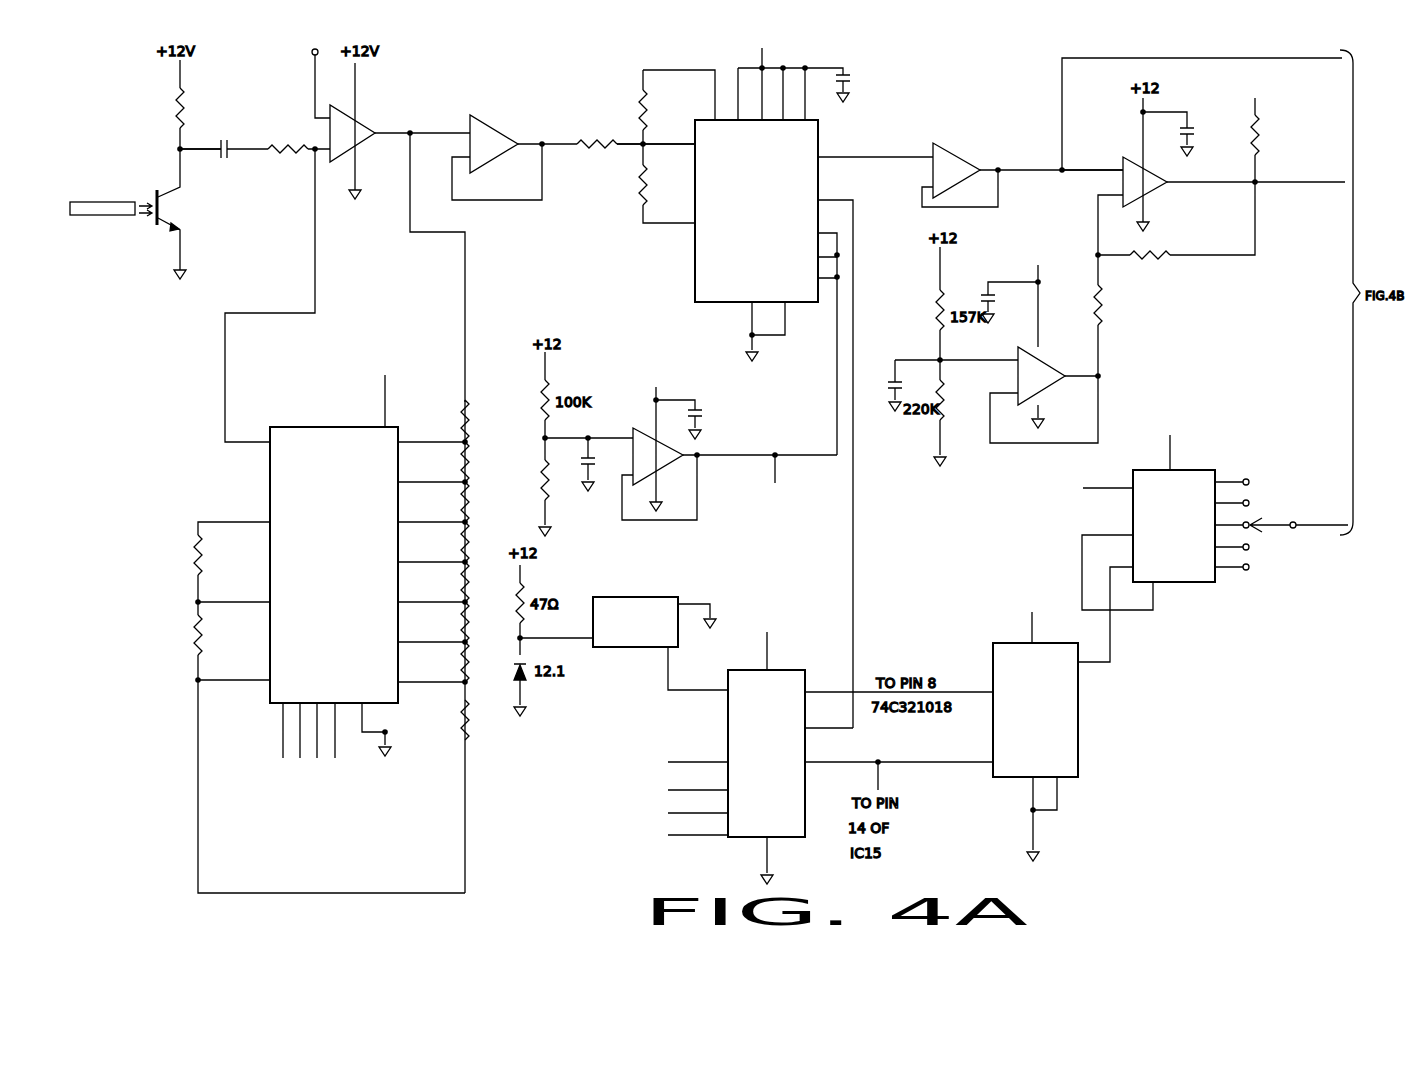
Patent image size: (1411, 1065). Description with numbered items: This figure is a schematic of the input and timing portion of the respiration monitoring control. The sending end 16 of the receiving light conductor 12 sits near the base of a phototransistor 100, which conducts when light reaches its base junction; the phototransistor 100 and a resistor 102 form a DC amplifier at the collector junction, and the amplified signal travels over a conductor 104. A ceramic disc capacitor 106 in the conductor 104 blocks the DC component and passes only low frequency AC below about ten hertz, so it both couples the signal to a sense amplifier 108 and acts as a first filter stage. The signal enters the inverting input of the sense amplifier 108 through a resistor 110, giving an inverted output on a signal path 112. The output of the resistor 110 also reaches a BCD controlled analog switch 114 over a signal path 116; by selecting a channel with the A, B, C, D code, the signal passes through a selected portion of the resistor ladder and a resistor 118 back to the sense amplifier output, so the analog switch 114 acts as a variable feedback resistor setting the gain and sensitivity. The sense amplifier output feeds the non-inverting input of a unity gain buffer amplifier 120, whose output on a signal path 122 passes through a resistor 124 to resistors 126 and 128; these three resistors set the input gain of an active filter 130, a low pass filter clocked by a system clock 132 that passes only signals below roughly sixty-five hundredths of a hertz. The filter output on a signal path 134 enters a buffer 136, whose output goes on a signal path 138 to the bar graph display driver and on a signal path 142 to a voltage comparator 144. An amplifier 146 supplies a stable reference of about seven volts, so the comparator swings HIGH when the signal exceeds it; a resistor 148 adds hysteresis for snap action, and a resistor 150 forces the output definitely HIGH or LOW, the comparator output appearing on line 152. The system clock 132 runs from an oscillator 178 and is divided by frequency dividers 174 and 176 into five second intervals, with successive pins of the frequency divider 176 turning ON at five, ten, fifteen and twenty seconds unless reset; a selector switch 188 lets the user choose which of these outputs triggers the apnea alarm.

The receiving light conductor 12 is at (115, 204).
The sending end 16 is at (149, 204).
The phototransistor 100 is at (150, 220).
The resistor 102 is at (186, 108).
The conductor 104 is at (203, 155).
The ceramic disc capacitor 106 is at (221, 143).
The sense amplifier 108 is at (362, 120).
The resistor 110 is at (297, 140).
The signal path 112 is at (393, 133).
The BCD controlled analog switch 114 is at (300, 427).
The signal path 116 is at (316, 282).
The resistor 118 is at (460, 415).
The buffer amplifier 120 is at (488, 125).
The signal path 122 is at (560, 140).
The resistor 124 is at (564, 150).
The resistor 126 is at (640, 95).
The resistor 128 is at (643, 205).
The active filter 130 is at (830, 120).
The system clock 132 is at (728, 742).
The signal path 134 is at (872, 157).
The buffer 136 is at (950, 155).
The signal path 138 is at (1280, 58).
The signal path 142 is at (1083, 175).
The voltage comparator 144 is at (1135, 160).
The amplifier 146 is at (1045, 357).
The resistor 148 is at (1160, 265).
The resistor 150 is at (1262, 118).
The comparator output line 152 is at (1312, 184).
The frequency divider 174 is at (1080, 725).
The frequency divider 176 is at (1212, 470).
The oscillator 178 is at (645, 597).
The selector switch 188 is at (1270, 532).